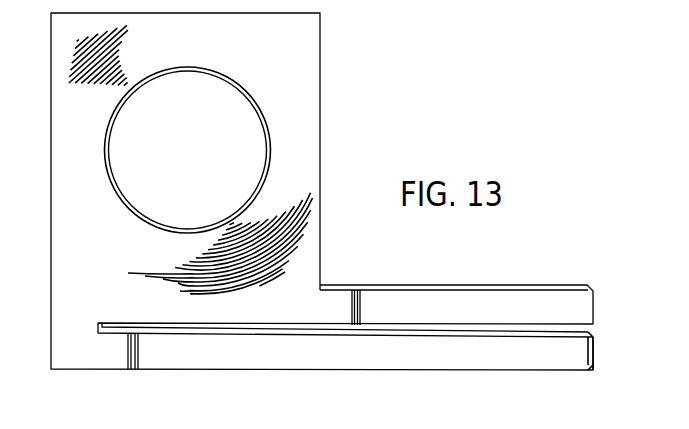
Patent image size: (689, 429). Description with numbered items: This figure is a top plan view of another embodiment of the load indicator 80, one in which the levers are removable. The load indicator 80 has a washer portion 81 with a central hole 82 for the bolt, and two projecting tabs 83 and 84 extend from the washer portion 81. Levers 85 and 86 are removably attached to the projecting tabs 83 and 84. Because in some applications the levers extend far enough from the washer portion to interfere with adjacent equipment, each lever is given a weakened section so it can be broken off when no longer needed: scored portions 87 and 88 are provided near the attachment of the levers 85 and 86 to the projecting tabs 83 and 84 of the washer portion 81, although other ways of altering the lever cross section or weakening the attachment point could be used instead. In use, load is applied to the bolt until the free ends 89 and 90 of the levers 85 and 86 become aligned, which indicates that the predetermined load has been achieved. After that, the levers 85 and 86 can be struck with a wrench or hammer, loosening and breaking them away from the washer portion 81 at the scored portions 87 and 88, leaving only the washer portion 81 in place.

The load indicator 80 is at (323, 116).
The washer portion 81 is at (298, 163).
The central hole 82 is at (212, 87).
The projecting tab 83 is at (337, 300).
The projecting tab 84 is at (71, 352).
The lever 85 is at (445, 305).
The lever 86 is at (400, 356).
The scored portion 87 is at (363, 298).
The scored portion 88 is at (137, 357).
The free end 89 is at (594, 310).
The free end 90 is at (594, 346).